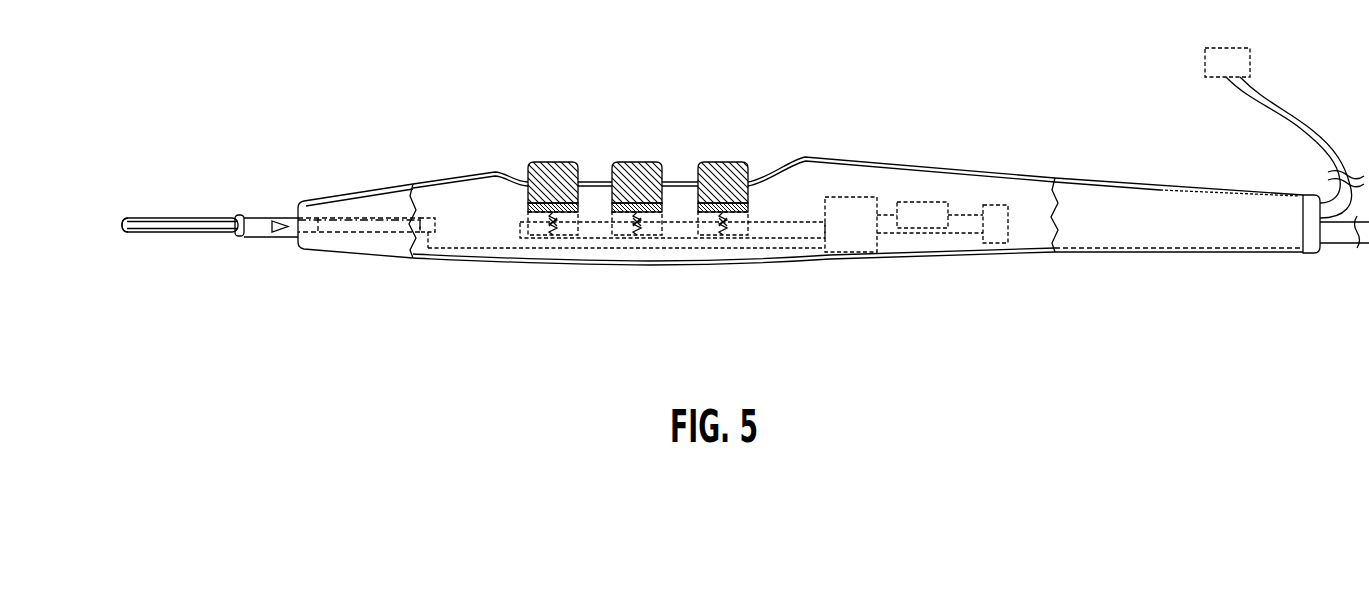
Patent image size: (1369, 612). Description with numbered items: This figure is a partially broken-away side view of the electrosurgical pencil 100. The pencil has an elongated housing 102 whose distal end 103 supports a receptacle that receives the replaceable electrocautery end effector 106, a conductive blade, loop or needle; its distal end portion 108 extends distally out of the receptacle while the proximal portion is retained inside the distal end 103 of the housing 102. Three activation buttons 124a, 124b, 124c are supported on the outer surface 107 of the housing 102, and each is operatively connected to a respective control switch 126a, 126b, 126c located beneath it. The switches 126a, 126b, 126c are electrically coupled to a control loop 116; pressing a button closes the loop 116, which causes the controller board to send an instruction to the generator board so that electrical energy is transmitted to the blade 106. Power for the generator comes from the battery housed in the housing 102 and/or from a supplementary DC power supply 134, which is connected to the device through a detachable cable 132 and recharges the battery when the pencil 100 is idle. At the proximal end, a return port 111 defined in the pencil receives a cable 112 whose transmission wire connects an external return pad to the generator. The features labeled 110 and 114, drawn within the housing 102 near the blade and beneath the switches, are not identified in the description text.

The electrosurgical pencil 100 is at (937, 93).
The elongated housing 102 is at (1101, 174).
The distal end 103 is at (345, 195).
The electrocautery end effector 106 is at (172, 210).
The outer surface 107 is at (573, 270).
The distal end portion 108 is at (120, 227).
The lumen 110 is at (338, 238).
The return port 111 is at (1304, 191).
The cable 112 is at (1335, 249).
The circuit board 114 is at (735, 240).
The control loop 116 is at (887, 208).
The activation button 124a is at (552, 161).
The activation button 124b is at (636, 161).
The activation button 124c is at (741, 162).
The control switch 126a is at (524, 208).
The control switch 126b is at (613, 207).
The control switch 126c is at (698, 207).
The cable 132 is at (1237, 103).
The supplementary DC power supply 134 is at (1205, 62).